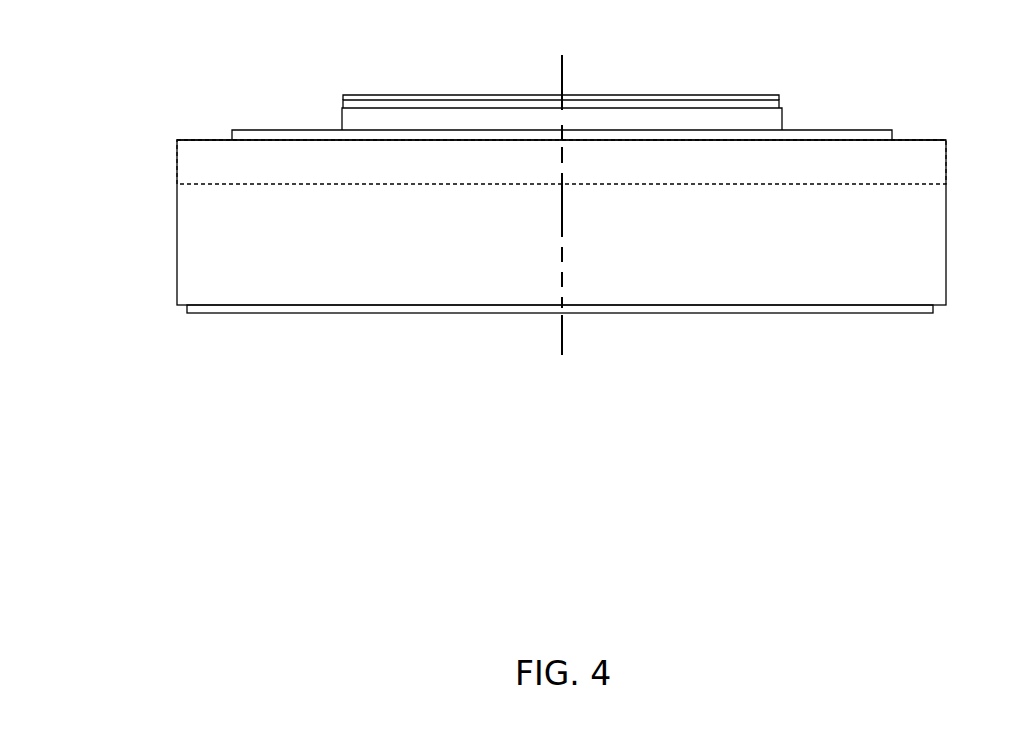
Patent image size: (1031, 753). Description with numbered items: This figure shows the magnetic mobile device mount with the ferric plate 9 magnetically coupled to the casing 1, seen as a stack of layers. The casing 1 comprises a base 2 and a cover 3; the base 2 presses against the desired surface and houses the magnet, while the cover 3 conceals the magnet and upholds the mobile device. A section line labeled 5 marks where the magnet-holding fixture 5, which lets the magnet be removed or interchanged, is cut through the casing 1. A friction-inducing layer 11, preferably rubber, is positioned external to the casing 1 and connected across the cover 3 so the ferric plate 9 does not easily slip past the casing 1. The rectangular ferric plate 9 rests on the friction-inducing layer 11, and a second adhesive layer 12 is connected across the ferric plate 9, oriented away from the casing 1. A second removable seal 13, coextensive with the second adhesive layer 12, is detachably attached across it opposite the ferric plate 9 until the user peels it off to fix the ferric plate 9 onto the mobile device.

The casing 1 is at (162, 198).
The base 2 is at (930, 239).
The cover 3 is at (931, 166).
The magnet-holding fixture 5 is at (565, 73).
The ferric plate 9 is at (342, 118).
The friction-inducing layer 11 is at (234, 135).
The second adhesive layer 12 is at (779, 103).
The second removable seal 13 is at (343, 97).